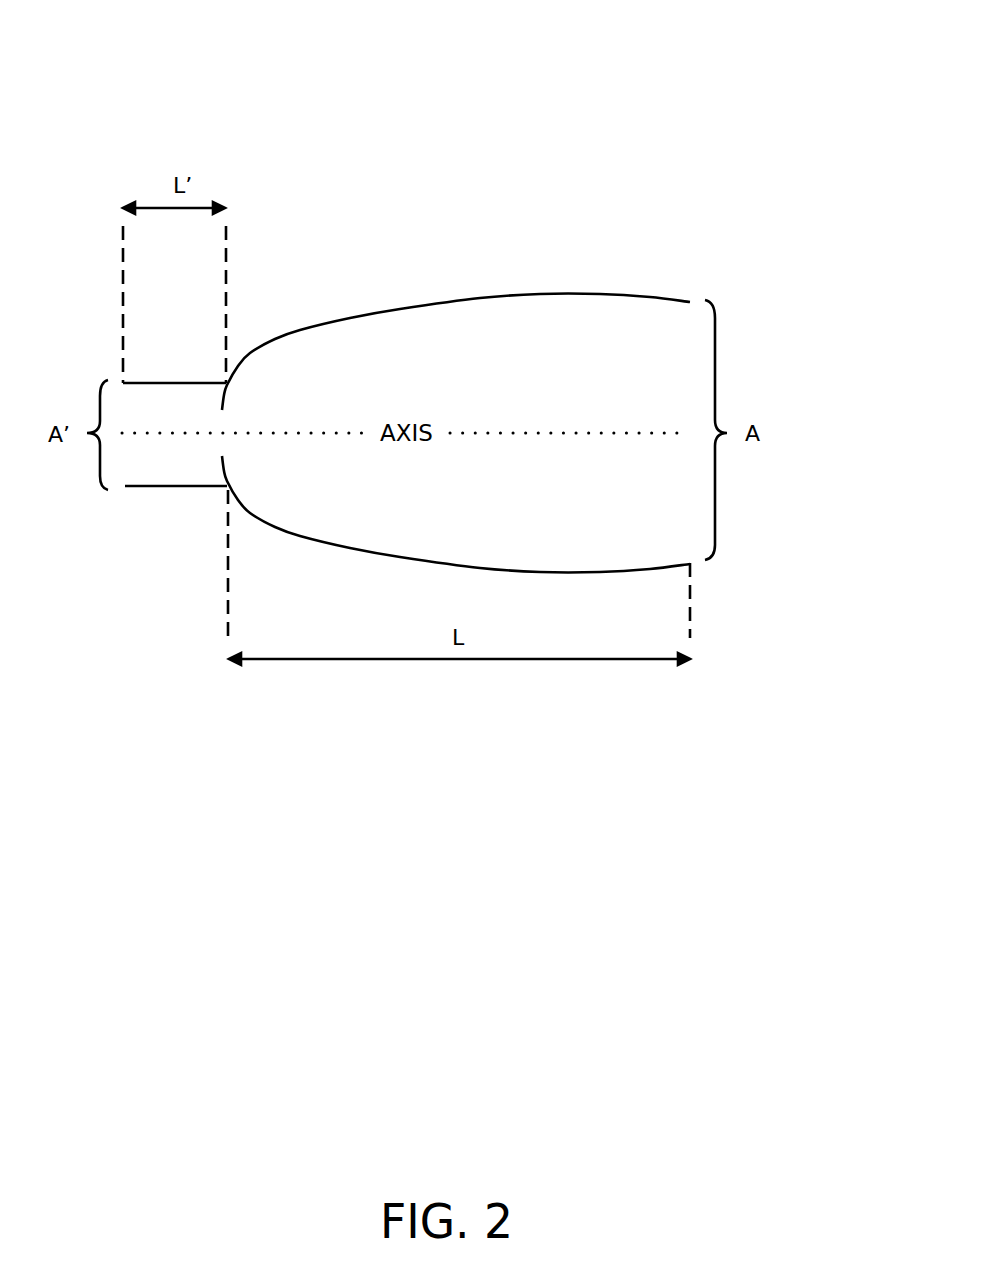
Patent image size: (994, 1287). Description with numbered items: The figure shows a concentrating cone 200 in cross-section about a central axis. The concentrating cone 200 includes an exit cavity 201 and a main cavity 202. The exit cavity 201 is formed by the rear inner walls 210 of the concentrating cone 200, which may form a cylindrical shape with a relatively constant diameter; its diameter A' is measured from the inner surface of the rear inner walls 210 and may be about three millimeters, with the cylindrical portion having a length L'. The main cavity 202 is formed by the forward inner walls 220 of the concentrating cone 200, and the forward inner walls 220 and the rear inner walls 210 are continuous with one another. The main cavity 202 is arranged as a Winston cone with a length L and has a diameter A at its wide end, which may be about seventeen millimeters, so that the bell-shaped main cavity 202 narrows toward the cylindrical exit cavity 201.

The concentrating cone 200 is at (589, 71).
The exit cavity 201 is at (162, 450).
The main cavity 202 is at (480, 352).
The rear inner walls 210 is at (137, 382).
The forward inner walls 220 is at (596, 300).